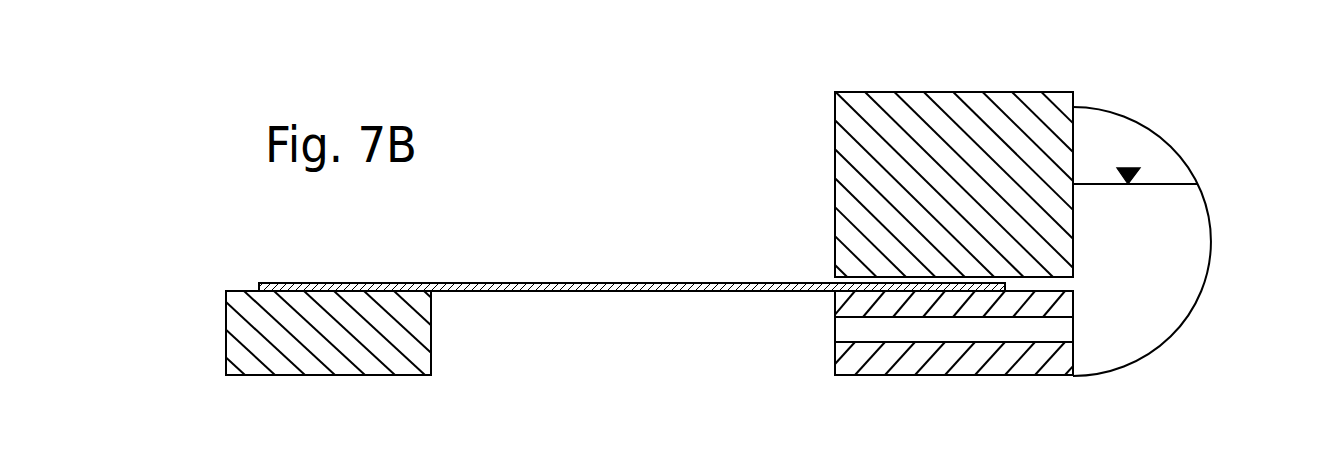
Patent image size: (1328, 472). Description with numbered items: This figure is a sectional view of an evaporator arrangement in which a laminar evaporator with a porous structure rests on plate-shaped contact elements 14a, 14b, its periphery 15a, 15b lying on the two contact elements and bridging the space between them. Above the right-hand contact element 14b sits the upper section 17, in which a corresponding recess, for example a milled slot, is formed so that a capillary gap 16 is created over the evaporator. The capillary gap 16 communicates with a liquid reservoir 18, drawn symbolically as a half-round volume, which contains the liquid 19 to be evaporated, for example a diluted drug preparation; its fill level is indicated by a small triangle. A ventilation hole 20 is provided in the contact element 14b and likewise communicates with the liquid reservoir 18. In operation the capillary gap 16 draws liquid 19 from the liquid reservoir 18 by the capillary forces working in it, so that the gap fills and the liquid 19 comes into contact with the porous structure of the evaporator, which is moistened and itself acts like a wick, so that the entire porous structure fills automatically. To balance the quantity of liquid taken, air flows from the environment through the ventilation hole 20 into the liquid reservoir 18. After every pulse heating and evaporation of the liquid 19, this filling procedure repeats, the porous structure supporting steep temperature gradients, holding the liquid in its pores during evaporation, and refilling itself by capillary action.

The plate-shaped contact element 14a is at (267, 348).
The contact element 14b is at (1005, 365).
The periphery 15a is at (441, 303).
The periphery 15b is at (825, 301).
The capillary gap 16 is at (1058, 285).
The upper section 17 is at (980, 132).
The liquid reservoir 18 is at (1172, 147).
The liquid 19 is at (1123, 233).
The ventilation hole 20 is at (1050, 328).